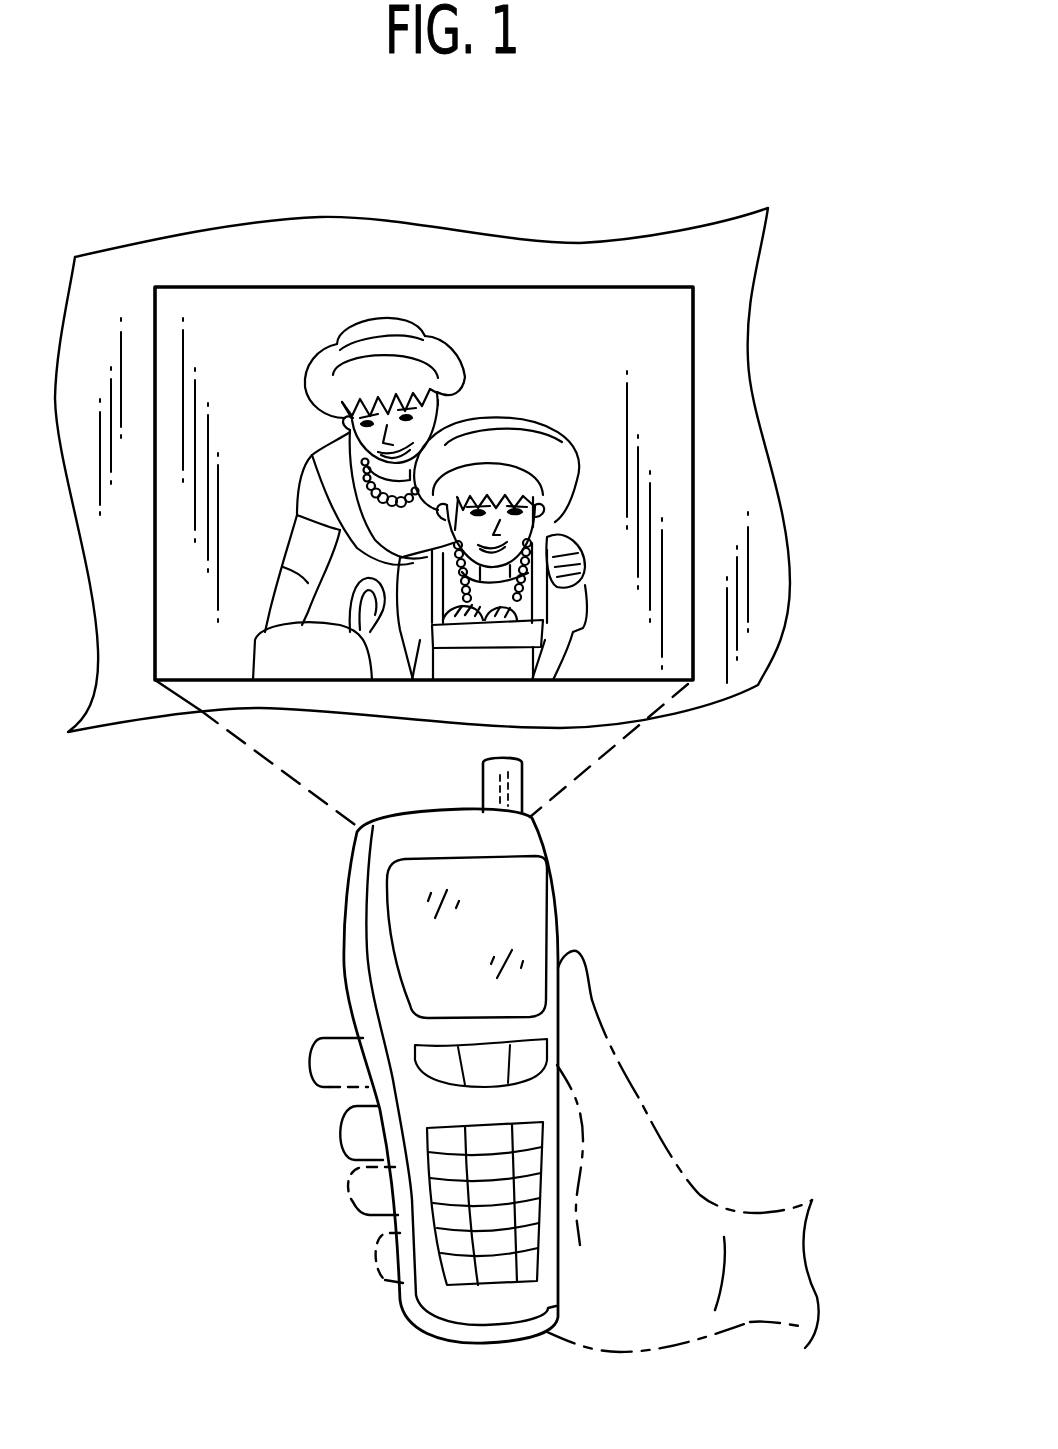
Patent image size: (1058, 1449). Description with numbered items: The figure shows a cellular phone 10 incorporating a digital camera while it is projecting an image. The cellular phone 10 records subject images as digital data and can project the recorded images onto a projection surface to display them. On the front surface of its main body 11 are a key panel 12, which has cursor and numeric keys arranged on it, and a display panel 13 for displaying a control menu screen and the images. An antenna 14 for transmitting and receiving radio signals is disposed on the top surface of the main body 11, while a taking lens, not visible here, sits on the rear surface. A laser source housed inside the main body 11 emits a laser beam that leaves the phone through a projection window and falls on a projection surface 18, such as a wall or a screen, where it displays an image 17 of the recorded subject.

The cellular phone 10 is at (497, 1040).
The main body 11 is at (570, 914).
The key panel 12 is at (412, 1183).
The display panel 13 is at (412, 913).
The antenna 14 is at (490, 775).
The image 17 is at (647, 402).
The projection surface 18 is at (758, 508).